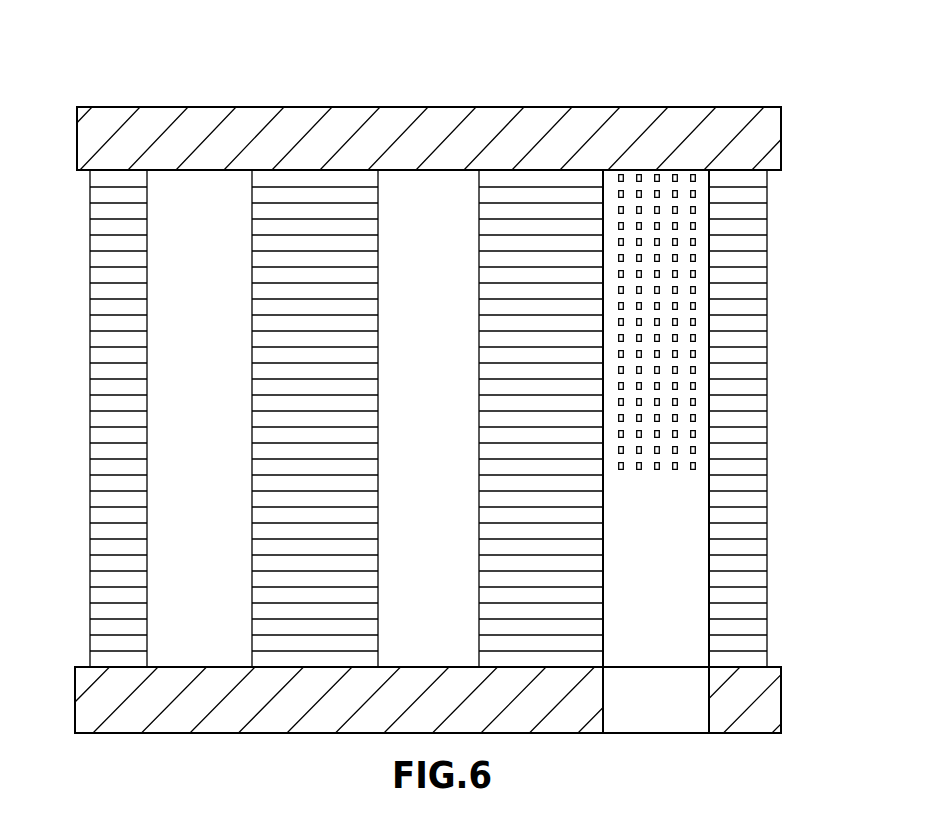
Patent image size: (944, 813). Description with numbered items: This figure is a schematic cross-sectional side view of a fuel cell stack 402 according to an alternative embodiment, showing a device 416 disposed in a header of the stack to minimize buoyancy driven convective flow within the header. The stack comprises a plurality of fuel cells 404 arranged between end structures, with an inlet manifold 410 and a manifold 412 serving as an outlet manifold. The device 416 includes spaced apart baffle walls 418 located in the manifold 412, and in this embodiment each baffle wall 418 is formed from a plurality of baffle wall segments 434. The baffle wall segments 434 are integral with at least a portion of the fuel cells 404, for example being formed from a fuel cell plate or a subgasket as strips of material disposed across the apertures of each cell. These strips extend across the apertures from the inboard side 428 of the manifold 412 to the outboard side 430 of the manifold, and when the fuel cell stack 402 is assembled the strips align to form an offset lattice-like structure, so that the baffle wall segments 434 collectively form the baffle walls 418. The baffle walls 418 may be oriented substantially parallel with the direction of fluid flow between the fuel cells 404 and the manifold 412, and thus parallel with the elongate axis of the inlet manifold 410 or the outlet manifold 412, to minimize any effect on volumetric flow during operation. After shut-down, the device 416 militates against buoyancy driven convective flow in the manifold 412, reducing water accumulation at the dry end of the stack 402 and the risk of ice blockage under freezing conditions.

The fuel cell stack 402 is at (118, 66).
The fuel cells 404 is at (252, 468).
The inlet manifold 410 is at (218, 591).
The manifold 412 is at (677, 600).
The device 416 is at (650, 200).
The spaced apart baffle walls 418 is at (659, 285).
The inboard side 428 is at (615, 641).
The outboard side 430 is at (700, 533).
The baffle wall segments 434 is at (696, 387).